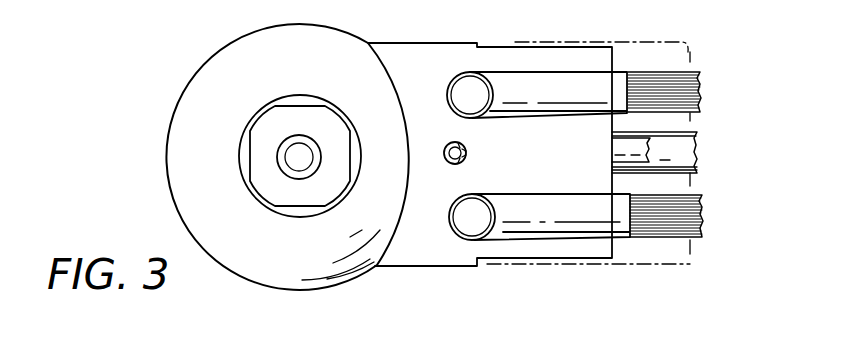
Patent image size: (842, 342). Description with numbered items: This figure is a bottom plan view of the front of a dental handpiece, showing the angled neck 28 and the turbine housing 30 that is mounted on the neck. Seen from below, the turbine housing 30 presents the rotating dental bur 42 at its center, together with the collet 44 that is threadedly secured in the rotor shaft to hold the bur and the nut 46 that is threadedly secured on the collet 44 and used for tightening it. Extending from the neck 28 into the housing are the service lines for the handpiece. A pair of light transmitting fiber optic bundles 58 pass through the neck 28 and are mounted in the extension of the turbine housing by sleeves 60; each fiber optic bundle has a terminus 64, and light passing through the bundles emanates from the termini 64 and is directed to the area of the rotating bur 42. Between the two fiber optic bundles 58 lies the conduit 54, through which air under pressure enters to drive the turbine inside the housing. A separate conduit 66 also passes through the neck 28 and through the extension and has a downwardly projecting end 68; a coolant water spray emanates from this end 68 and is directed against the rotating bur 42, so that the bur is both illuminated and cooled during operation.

The angled neck 28 is at (700, 15).
The turbine housing 30 is at (168, 151).
The dental bur 42 is at (300, 149).
The collet 44 is at (322, 160).
The nut 46 is at (323, 119).
The conduit 54 is at (703, 156).
The fiber optic bundles 58 is at (702, 99).
The sleeves 60 is at (546, 192).
The terminus 64 is at (466, 88).
The conduit 66 is at (642, 146).
The downwardly projecting end 68 is at (467, 153).